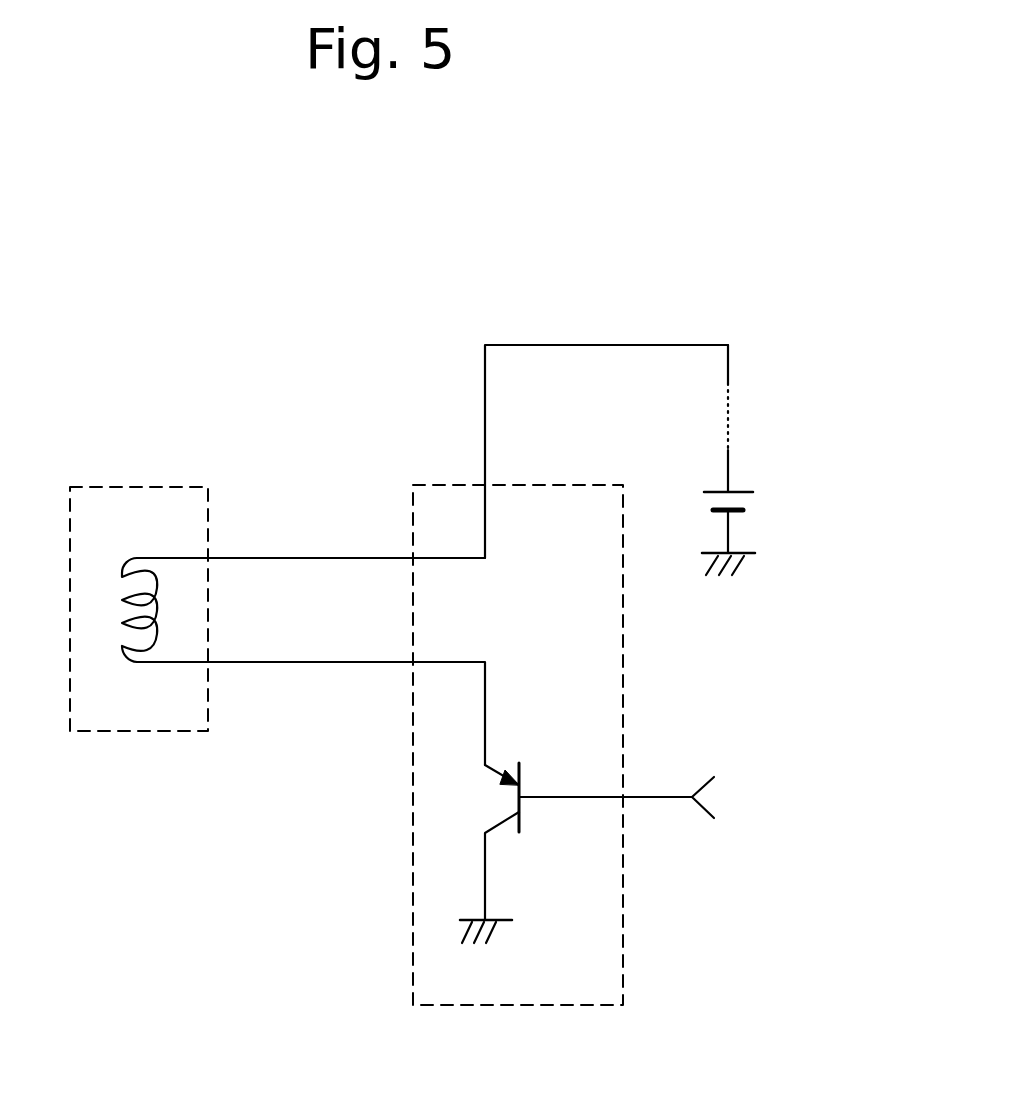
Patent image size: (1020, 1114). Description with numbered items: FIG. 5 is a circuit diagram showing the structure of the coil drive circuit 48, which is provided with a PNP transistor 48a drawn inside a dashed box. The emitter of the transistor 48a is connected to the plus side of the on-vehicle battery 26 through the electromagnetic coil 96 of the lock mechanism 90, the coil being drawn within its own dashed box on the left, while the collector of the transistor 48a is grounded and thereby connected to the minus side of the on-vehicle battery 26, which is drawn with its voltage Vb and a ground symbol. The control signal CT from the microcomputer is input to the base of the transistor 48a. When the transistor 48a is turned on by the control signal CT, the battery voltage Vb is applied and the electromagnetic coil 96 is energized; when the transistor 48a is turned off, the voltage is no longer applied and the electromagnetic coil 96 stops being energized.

The lock mechanism 90 is at (141, 487).
The electromagnetic coil 96 is at (112, 648).
The on-vehicle battery 26 is at (752, 508).
The coil drive circuit 48 is at (500, 1010).
The PNP transistor 48a is at (485, 807).